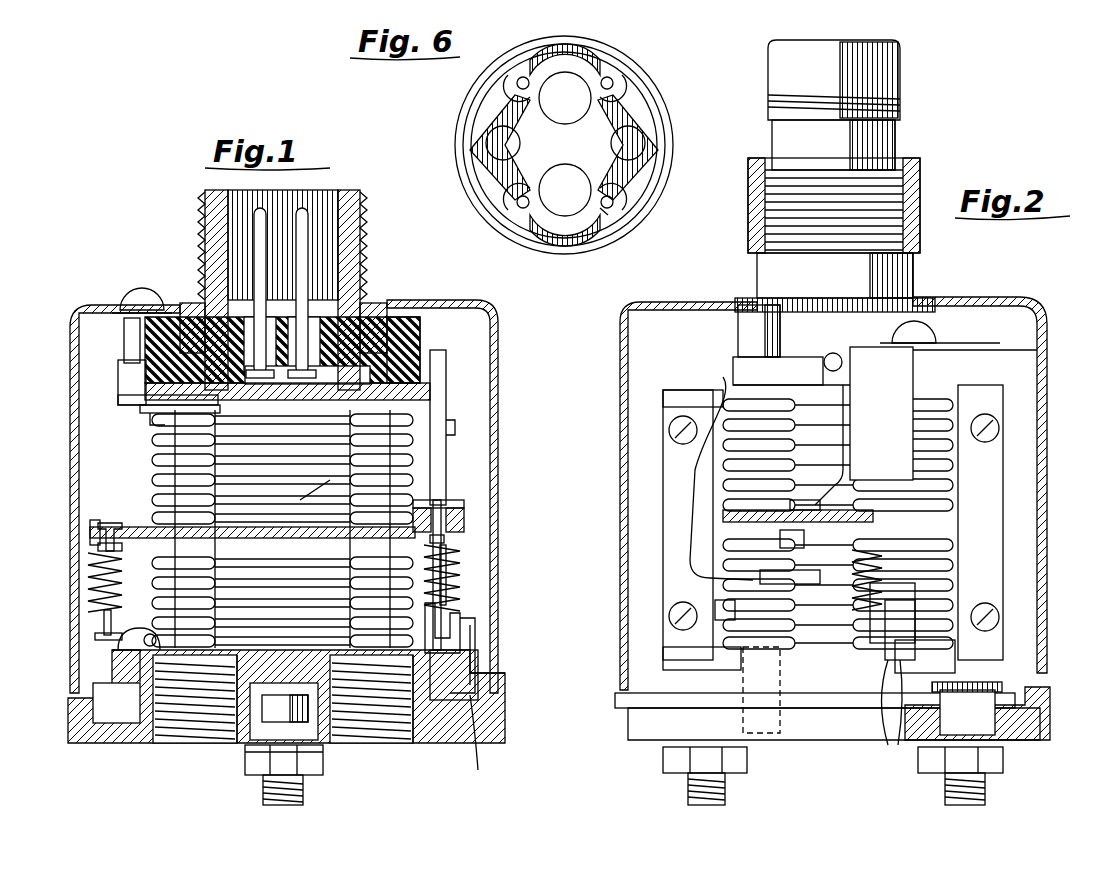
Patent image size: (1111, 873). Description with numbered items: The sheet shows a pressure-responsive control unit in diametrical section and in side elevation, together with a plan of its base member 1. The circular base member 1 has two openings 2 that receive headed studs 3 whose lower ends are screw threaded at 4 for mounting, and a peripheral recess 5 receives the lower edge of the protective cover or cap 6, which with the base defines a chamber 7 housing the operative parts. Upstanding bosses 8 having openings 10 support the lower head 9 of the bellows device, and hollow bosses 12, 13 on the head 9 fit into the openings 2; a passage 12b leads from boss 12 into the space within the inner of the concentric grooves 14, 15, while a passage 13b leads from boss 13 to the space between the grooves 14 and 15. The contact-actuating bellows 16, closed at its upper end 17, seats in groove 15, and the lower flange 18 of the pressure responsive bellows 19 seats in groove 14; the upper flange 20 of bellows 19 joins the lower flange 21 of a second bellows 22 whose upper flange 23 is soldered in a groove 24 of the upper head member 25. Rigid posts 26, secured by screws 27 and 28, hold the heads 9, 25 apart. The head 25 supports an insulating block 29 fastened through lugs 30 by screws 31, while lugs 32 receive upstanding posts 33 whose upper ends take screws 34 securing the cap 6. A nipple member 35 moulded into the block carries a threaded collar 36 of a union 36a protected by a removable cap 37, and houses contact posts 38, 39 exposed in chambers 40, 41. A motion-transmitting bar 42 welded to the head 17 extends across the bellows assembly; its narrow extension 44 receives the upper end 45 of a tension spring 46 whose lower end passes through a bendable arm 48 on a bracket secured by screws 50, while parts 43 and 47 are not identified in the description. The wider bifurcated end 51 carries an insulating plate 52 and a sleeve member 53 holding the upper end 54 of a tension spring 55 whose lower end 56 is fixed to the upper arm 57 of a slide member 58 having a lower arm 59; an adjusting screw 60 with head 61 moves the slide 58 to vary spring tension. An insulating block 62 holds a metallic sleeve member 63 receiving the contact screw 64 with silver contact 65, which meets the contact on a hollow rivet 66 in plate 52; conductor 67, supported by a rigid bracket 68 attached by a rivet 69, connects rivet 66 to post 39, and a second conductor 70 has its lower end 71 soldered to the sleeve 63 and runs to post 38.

In FIG. 1, the base member 1 is at (490, 712).
In FIG. 6, the base member 1 is at (668, 95).
In FIG. 2, the base member 1 is at (885, 748).
In FIG. 6, the openings 2 is at (563, 112).
In FIG. 1, the headed studs 3 is at (265, 795).
In FIG. 6, the headed studs 3 is at (503, 150).
In FIG. 2, the headed studs 3 is at (985, 690).
In FIG. 1, the screw threaded lower ends 4 is at (270, 710).
In FIG. 2, the screw threaded lower ends 4 is at (690, 790).
In FIG. 6, the recess 5 is at (672, 160).
In FIG. 2, the recess 5 is at (1045, 695).
In FIG. 1, the protective cover or cap 6 is at (492, 400).
In FIG. 2, the protective cover or cap 6 is at (1047, 595).
In FIG. 1, the chamber 7 is at (478, 366).
In FIG. 2, the chamber 7 is at (1040, 565).
In FIG. 6, the upstanding bosses 8 is at (523, 77).
In FIG. 1, the lower head 9 is at (478, 665).
In FIG. 2, the lower head 9 is at (670, 660).
In FIG. 6, the openings 10 is at (612, 210).
In FIG. 1, the hollow boss 12 is at (160, 740).
In FIG. 1, the passage 12b is at (242, 735).
In FIG. 1, the hollow boss 13 is at (408, 735).
In FIG. 1, the passage 13b is at (393, 680).
In FIG. 1, the concentric groove 14 is at (150, 650).
In FIG. 1, the concentric groove 15 is at (143, 673).
In FIG. 1, the contact-actuating bellows 16 is at (200, 535).
In FIG. 1, the closed upper end 17 is at (283, 530).
In FIG. 1, the downturned lower flange 18 is at (150, 632).
In FIG. 1, the pressure responsive bellows 19 is at (90, 530).
In FIG. 2, the pressure responsive bellows 19 is at (955, 555).
In FIG. 1, the upturned upper flange 20 is at (157, 563).
In FIG. 2, the upturned upper flange 20 is at (955, 535).
In FIG. 1, the downturned lower flange 21 is at (440, 500).
In FIG. 2, the downturned lower flange 21 is at (955, 515).
In FIG. 1, the second bellows 22 is at (160, 465).
In FIG. 2, the second bellows 22 is at (950, 475).
In FIG. 1, the upper upturned flange 23 is at (160, 418).
In FIG. 1, the groove 24 is at (150, 412).
In FIG. 1, the upper head member 25 is at (155, 400).
In FIG. 2, the upper head member 25 is at (668, 390).
In FIG. 2, the rigid posts 26 is at (670, 512).
In FIG. 2, the screws 27 is at (668, 618).
In FIG. 2, the screws 28 is at (670, 425).
In FIG. 1, the insulating block 29 is at (400, 320).
In FIG. 2, the insulating block 29 is at (745, 340).
In FIG. 2, the outstanding lugs 30 is at (970, 300).
In FIG. 2, the screws 31 is at (935, 300).
In FIG. 1, the lugs 32 is at (123, 373).
In FIG. 2, the lugs 32 is at (740, 365).
In FIG. 1, the upstanding posts 33 is at (128, 330).
In FIG. 2, the upstanding posts 33 is at (740, 320).
In FIG. 1, the screws 34 is at (150, 292).
In FIG. 2, the screws 34 is at (920, 325).
In FIG. 1, the nipple member 35 is at (352, 290).
In FIG. 2, the nipple member 35 is at (760, 280).
In FIG. 2, the internally screw-threaded collar 36 is at (920, 178).
In FIG. 2, the union 36a is at (895, 140).
In FIG. 2, the removable cap 37 is at (900, 70).
In FIG. 1, the contact post 38 is at (258, 212).
In FIG. 1, the contact post 39 is at (302, 212).
In FIG. 1, the chamber 40 is at (225, 340).
In FIG. 1, the chamber 41 is at (333, 380).
In FIG. 1, the motion-transmitting member or bar 42 is at (448, 460).
In FIG. 1, the lever 43 is at (300, 500).
In FIG. 1, the narrow extension 44 is at (100, 526).
In FIG. 1, the upper end of tension spring 45 is at (100, 548).
In FIG. 1, the tension spring 46 is at (90, 582).
In FIG. 1, the stem 47 is at (104, 622).
In FIG. 1, the bendable arm 48 is at (95, 637).
In FIG. 1, the screws 50 is at (118, 645).
In FIG. 1, the opposite end 51 is at (442, 540).
In FIG. 1, the insulating plate 52 is at (430, 520).
In FIG. 1, the sleeve member 53 is at (462, 520).
In FIG. 1, the upper end of tension spring 54 is at (466, 510).
In FIG. 1, the tension spring 55 is at (460, 585).
In FIG. 2, the tension spring 55 is at (835, 565).
In FIG. 1, the lower end of tension spring 56 is at (465, 625).
In FIG. 2, the lower end of tension spring 56 is at (870, 640).
In FIG. 2, the upper arm 57 is at (855, 620).
In FIG. 1, the slide member 58 is at (480, 690).
In FIG. 2, the slide member 58 is at (890, 655).
In FIG. 1, the lower arm 59 is at (462, 740).
In FIG. 2, the lower arm 59 is at (846, 740).
In FIG. 2, the adjusting screw 60 is at (862, 745).
In FIG. 2, the head 61 is at (870, 612).
In FIG. 2, the insulating block 62 is at (760, 635).
In FIG. 2, the metallic sleeve member 63 is at (760, 580).
In FIG. 2, the contact screw 64 is at (785, 548).
In FIG. 2, the silver contact 65 is at (790, 540).
In FIG. 2, the hollow rivet 66 is at (800, 512).
In FIG. 2, the insulated conductor 67 is at (810, 495).
In FIG. 2, the rigid bracket 68 is at (835, 440).
In FIG. 2, the rivet 69 is at (833, 353).
In FIG. 2, the second flexible insulated conductor 70 is at (690, 487).
In FIG. 2, the lower end 71 is at (715, 610).